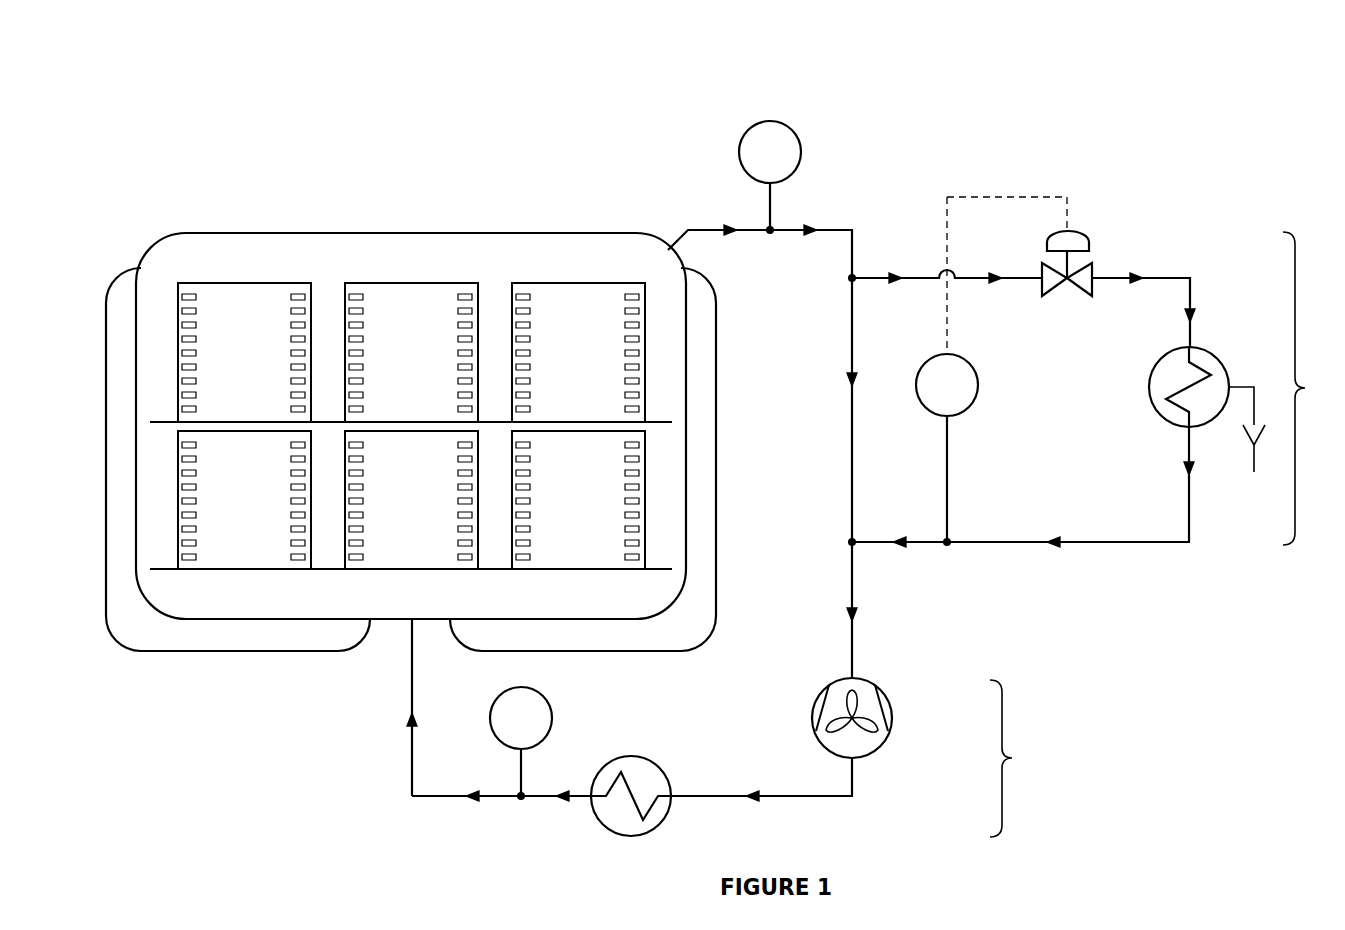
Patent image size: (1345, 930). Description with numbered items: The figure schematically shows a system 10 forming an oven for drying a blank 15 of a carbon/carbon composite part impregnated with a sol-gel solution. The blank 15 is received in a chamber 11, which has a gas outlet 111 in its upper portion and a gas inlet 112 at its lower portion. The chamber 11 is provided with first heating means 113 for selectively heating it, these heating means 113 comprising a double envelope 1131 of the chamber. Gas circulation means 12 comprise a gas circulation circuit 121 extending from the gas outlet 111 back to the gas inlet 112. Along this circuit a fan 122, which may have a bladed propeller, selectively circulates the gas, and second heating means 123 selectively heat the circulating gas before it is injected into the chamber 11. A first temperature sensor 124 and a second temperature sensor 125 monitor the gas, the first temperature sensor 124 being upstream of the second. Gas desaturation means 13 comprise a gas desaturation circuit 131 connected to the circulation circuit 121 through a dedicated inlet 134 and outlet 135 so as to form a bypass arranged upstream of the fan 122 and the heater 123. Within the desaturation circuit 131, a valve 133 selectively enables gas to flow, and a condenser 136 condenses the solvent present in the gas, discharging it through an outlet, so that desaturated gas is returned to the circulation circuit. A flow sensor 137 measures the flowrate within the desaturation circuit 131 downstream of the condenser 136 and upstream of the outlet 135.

The system 10 is at (921, 96).
The chamber 11 is at (422, 269).
The gas circulation means 12 is at (1013, 758).
The gas desaturation means 13 is at (1307, 388).
The blank 15 is at (255, 361).
The gas outlet 111 is at (670, 250).
The gas inlet 112 is at (408, 620).
The first heating means 113 is at (243, 633).
The double envelope 1131 is at (287, 653).
The gas circulation circuit 121 is at (714, 795).
The fan 122 is at (893, 720).
The second heating means 123 is at (648, 757).
The first temperature sensor 124 is at (786, 164).
The second temperature sensor 125 is at (537, 730).
The gas desaturation circuit 131 is at (1190, 502).
The valve 133 is at (1085, 230).
The inlet of the gas desaturation circuit 134 is at (850, 278).
The outlet of the gas desaturation circuit 135 is at (850, 542).
The condenser 136 is at (1204, 345).
The flow sensor 137 is at (963, 397).